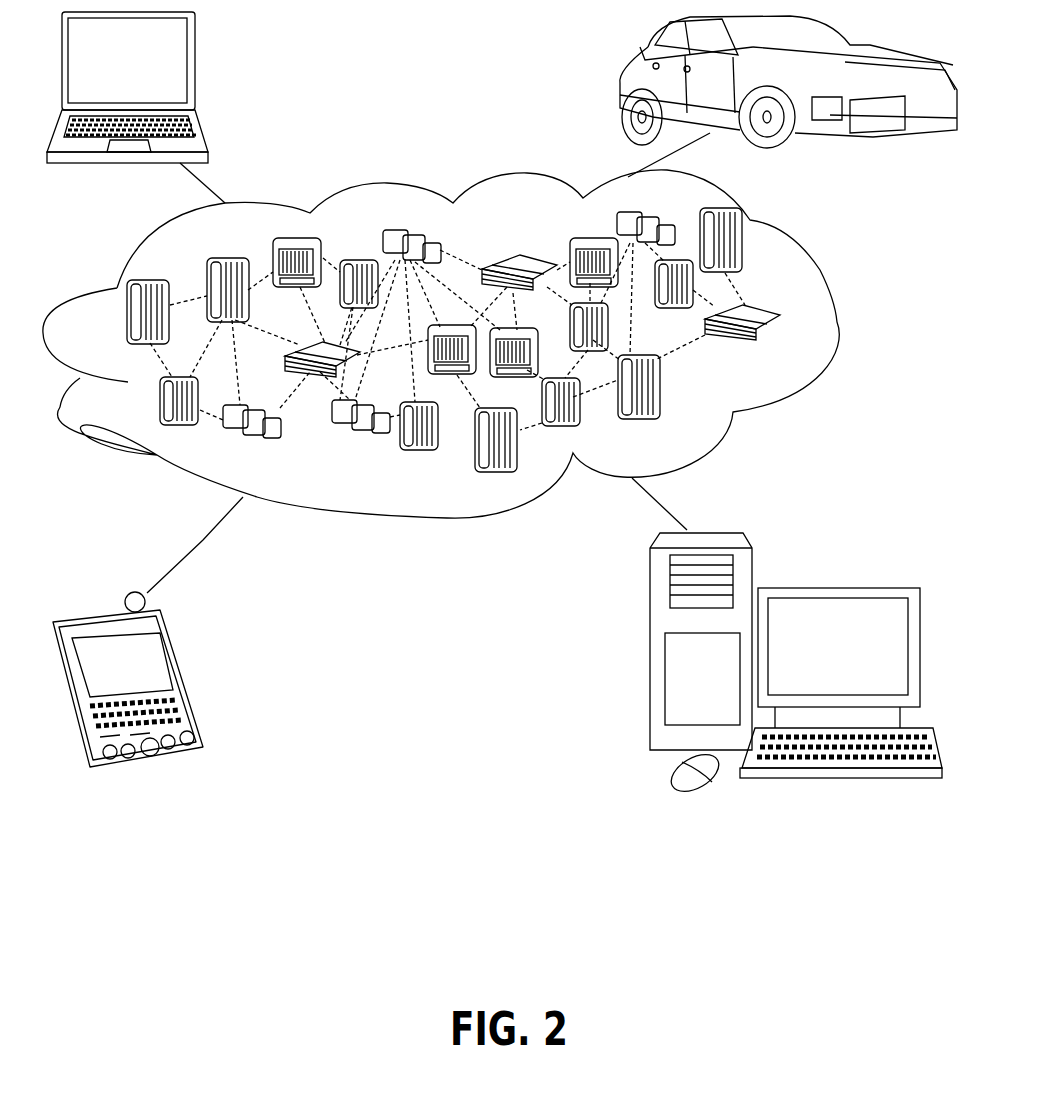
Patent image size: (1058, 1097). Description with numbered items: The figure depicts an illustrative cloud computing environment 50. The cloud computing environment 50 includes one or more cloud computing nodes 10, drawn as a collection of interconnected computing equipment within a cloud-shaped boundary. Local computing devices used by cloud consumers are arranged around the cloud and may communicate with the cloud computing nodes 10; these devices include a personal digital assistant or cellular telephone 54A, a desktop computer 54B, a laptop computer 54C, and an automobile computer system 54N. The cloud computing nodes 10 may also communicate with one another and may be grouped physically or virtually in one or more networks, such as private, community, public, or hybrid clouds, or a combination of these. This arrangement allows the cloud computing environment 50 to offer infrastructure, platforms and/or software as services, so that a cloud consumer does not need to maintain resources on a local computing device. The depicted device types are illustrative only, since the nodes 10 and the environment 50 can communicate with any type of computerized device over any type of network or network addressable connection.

The cloud computing nodes 10 is at (788, 351).
The cloud computing environment 50 is at (837, 320).
The personal digital assistant or cellular telephone 54A is at (155, 632).
The desktop computer 54B is at (833, 588).
The laptop computer 54C is at (195, 68).
The automobile computer system 54N is at (752, 96).